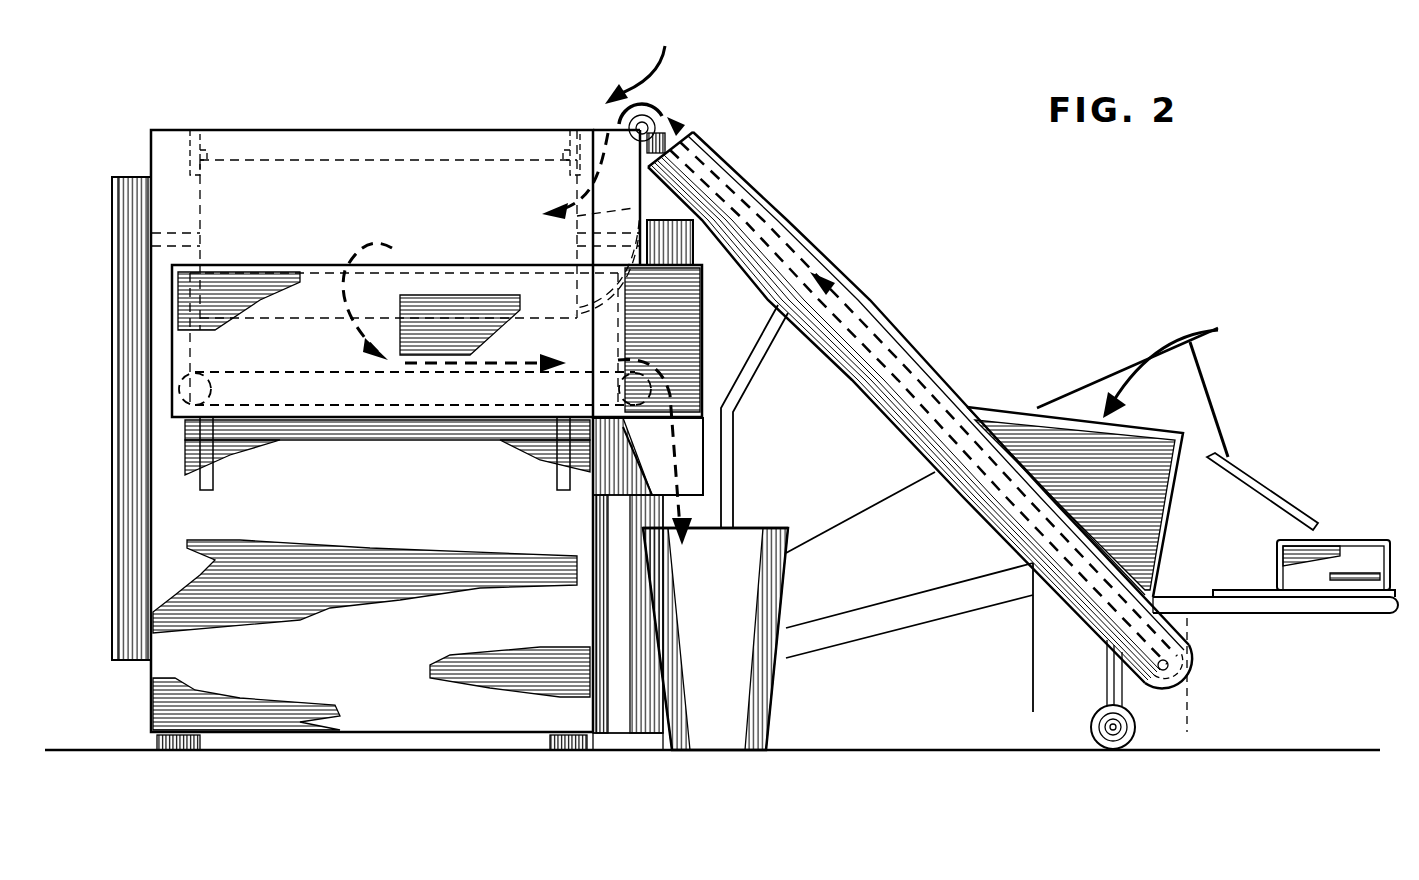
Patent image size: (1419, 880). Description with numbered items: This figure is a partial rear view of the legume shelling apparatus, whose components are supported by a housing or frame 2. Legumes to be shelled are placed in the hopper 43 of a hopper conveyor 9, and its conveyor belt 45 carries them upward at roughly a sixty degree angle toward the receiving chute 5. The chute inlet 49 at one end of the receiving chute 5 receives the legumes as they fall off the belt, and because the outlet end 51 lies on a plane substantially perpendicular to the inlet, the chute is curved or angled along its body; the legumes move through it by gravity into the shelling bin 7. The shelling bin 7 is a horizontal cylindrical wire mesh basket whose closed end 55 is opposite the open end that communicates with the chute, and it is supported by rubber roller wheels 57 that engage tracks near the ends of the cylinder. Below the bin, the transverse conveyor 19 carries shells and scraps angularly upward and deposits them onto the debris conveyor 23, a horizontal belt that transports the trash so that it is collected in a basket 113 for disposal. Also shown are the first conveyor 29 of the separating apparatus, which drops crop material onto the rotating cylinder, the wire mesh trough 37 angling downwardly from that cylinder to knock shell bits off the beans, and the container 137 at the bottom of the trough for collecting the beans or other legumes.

The housing or frame 2 is at (153, 688).
The receiving chute 5 is at (637, 67).
The shelling bin 7 is at (403, 199).
The hopper conveyor 9 is at (875, 322).
The transverse conveyor 19 is at (185, 325).
The debris conveyor 23 is at (428, 418).
The first conveyor 29 is at (1090, 378).
The wire mesh trough 37 is at (1280, 492).
The hopper 43 is at (1170, 508).
The conveyor belt 45 is at (948, 410).
The chute inlet 49 is at (590, 130).
The outlet end 51 is at (640, 212).
The closed end 55 is at (195, 181).
The rubber roller wheels 57 is at (200, 148).
The basket 113 is at (783, 690).
The container 137 is at (1355, 540).